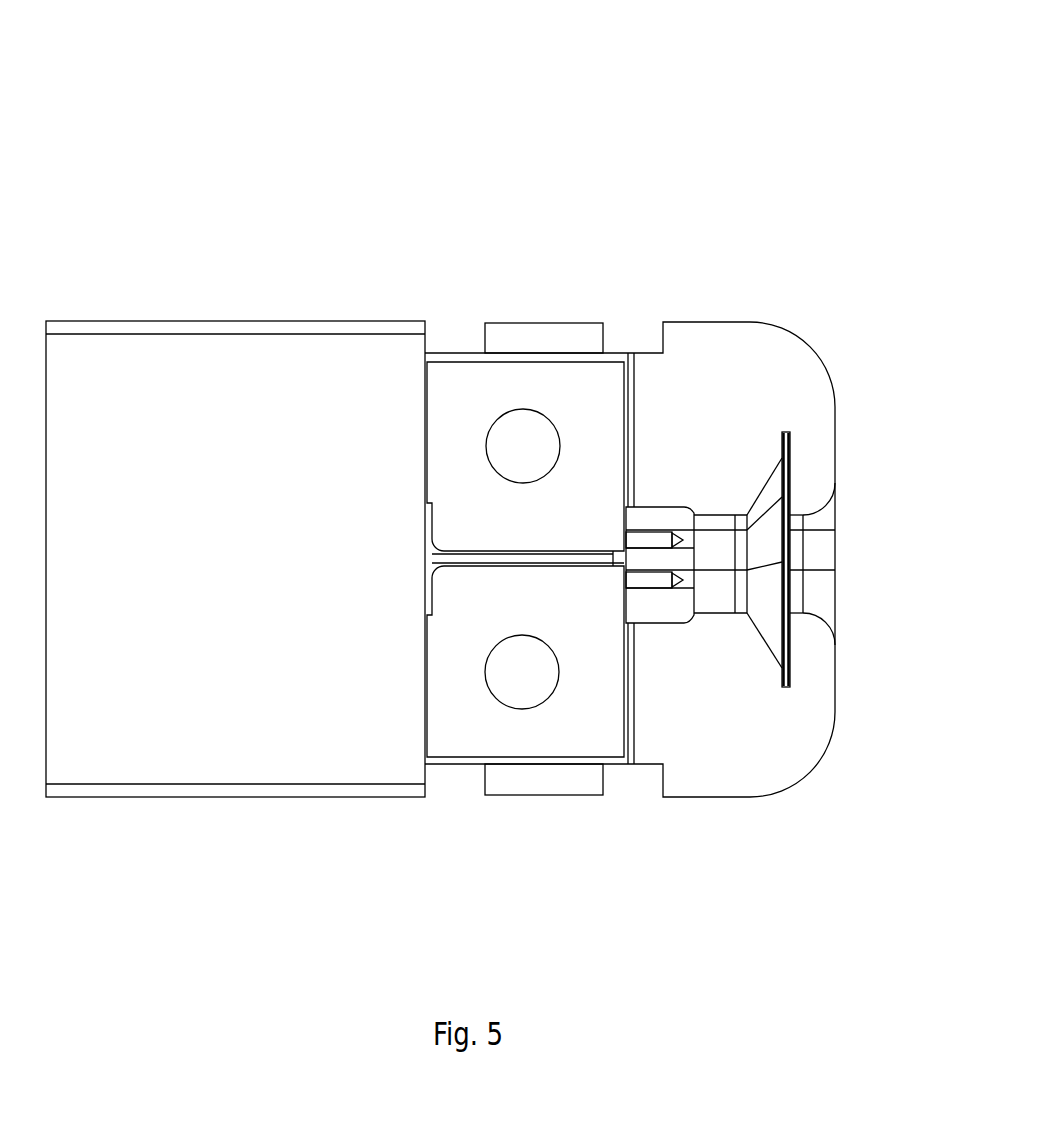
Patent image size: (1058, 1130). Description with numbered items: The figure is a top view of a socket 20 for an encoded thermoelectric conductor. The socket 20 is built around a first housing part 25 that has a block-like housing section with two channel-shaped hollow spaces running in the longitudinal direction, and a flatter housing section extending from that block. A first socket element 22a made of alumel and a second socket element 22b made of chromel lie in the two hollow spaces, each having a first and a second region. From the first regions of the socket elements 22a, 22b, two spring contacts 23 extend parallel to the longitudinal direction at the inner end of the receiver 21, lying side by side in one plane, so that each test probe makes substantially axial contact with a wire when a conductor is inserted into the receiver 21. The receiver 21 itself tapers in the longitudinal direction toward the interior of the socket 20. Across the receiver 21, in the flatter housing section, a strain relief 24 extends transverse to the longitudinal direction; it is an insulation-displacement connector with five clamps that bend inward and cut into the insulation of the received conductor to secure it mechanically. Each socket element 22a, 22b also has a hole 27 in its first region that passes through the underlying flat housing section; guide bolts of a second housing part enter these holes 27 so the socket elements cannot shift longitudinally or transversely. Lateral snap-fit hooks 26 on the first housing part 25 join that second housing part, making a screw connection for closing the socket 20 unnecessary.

The socket 20 is at (549, 150).
The receiver 21 is at (823, 593).
The first socket element 22a is at (443, 392).
The second socket element 22b is at (472, 708).
The spring contacts 23 is at (647, 540).
The strain relief 24 is at (790, 490).
The first housing part 25 is at (205, 683).
The snap-fit hook 26 is at (580, 337).
The hole 27 is at (524, 450).